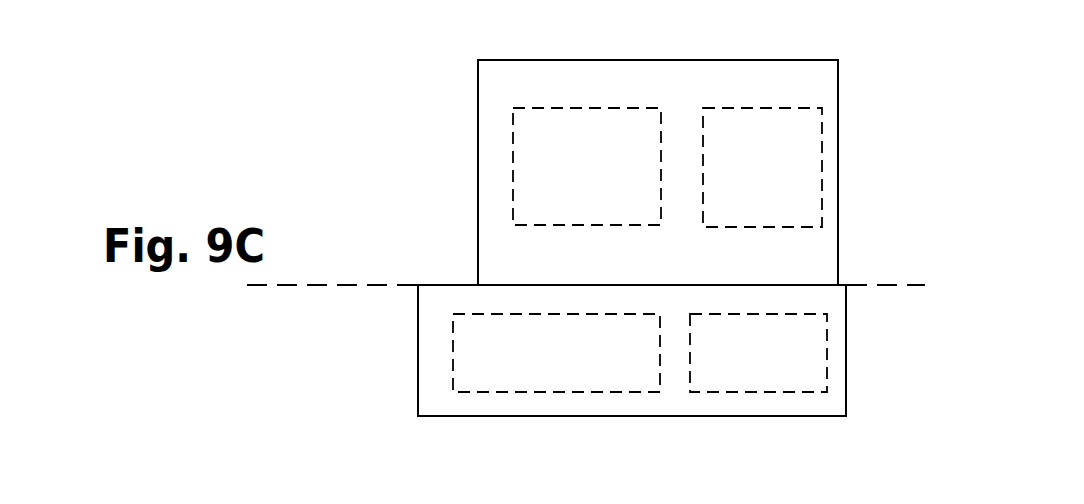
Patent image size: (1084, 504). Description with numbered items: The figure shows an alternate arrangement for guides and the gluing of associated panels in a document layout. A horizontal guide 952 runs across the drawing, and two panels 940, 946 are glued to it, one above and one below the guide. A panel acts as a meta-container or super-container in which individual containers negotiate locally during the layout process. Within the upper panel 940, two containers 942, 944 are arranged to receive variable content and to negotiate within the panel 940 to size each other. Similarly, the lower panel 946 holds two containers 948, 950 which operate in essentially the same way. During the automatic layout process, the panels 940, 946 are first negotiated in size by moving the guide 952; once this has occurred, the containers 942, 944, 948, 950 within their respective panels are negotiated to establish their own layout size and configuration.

The panel 940 is at (478, 108).
The container 942 is at (513, 165).
The container 944 is at (703, 223).
The panel 946 is at (418, 308).
The container 948 is at (453, 377).
The container 950 is at (723, 393).
The horizontal guide 952 is at (302, 285).